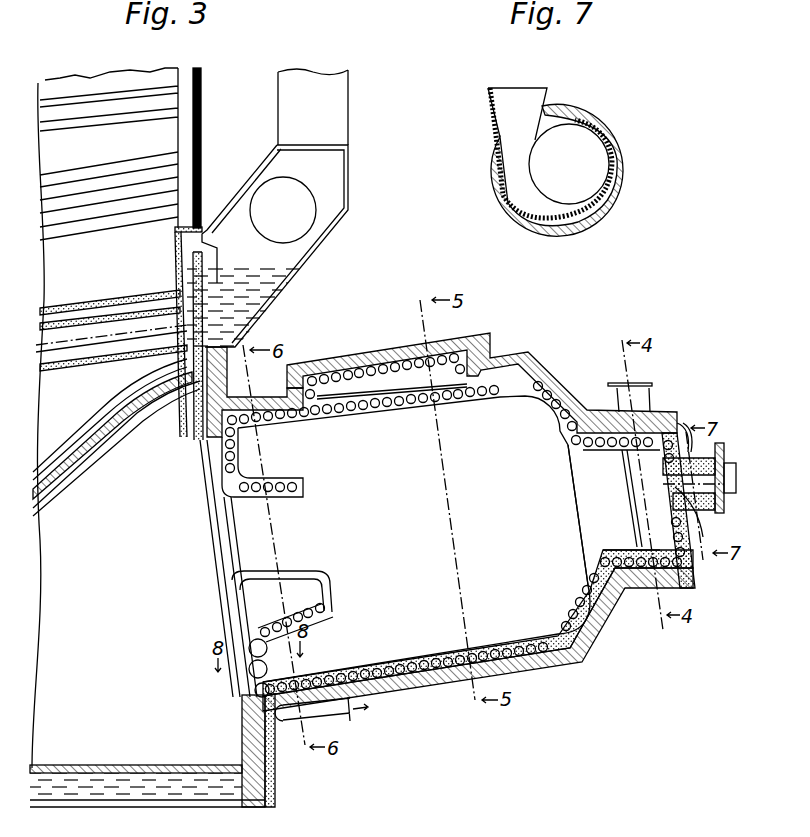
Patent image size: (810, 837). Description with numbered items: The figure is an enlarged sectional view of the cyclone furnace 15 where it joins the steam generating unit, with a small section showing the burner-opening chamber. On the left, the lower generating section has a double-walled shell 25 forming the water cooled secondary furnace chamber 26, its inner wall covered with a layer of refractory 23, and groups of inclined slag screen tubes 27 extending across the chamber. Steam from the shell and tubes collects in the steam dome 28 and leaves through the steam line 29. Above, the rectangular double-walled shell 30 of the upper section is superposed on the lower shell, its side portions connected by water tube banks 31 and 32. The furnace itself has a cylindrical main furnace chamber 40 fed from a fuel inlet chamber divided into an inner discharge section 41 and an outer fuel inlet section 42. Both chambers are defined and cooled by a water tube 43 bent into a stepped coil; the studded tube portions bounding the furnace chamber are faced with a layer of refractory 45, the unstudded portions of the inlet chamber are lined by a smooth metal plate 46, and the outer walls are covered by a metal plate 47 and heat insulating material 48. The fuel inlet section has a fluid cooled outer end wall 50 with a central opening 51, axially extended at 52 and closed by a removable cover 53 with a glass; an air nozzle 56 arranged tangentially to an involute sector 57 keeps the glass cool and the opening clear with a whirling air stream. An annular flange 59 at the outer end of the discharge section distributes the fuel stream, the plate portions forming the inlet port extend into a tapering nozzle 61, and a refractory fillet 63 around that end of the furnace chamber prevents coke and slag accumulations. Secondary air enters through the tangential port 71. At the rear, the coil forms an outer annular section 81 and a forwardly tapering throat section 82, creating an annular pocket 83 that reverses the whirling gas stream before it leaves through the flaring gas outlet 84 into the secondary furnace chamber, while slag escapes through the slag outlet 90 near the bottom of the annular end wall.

In FIG. 3, the cyclone furnace 15 is at (570, 664).
In FIG. 3, the layer of refractory 23 is at (102, 765).
In FIG. 3, the double-walled shell 25 is at (100, 807).
In FIG. 3, the furnace chamber 26 is at (122, 560).
In FIG. 3, the slag screen tubes 27 is at (130, 430).
In FIG. 3, the steam dome 28 is at (315, 237).
In FIG. 3, the steam line 29 is at (348, 96).
In FIG. 3, the rectangular double-walled shell 30 is at (201, 128).
In FIG. 3, the water tube bank 31 is at (128, 198).
In FIG. 3, the water tube bank 32 is at (100, 100).
In FIG. 3, the main furnace chamber 40 is at (430, 542).
In FIG. 3, the discharge section 41 is at (605, 517).
In FIG. 3, the fuel inlet section 42 is at (660, 509).
In FIG. 3, the water tube 43 is at (505, 650).
In FIG. 3, the layer of refractory 45 is at (400, 670).
In FIG. 3, the metal plate 46 is at (618, 550).
In FIG. 3, the metal plate 47 is at (538, 662).
In FIG. 3, the heat insulating material 48 is at (398, 690).
In FIG. 3, the outer end wall 50 is at (678, 421).
In FIG. 3, the central opening 51 is at (704, 534).
In FIG. 7, the central opening 51 is at (580, 174).
In FIG. 3, the axially extended portion 52 is at (725, 462).
In FIG. 7, the axially extended portion 52 is at (626, 184).
In FIG. 3, the removable cover 53 is at (736, 482).
In FIG. 3, the air nozzle 56 is at (700, 445).
In FIG. 7, the air nozzle 56 is at (508, 102).
In FIG. 7, the involute sector 57 is at (512, 205).
In FIG. 3, the annular flange 59 is at (637, 548).
In FIG. 3, the tapering nozzle 61 is at (652, 394).
In FIG. 3, the refractory fillet 63 is at (540, 404).
In FIG. 3, the secondary air port 71 is at (372, 362).
In FIG. 3, the outer annular section 81 is at (238, 458).
In FIG. 3, the throat section 82 is at (296, 478).
In FIG. 3, the annular pocket 83 is at (337, 657).
In FIG. 3, the gas outlet 84 is at (305, 562).
In FIG. 3, the slag outlet 90 is at (248, 672).